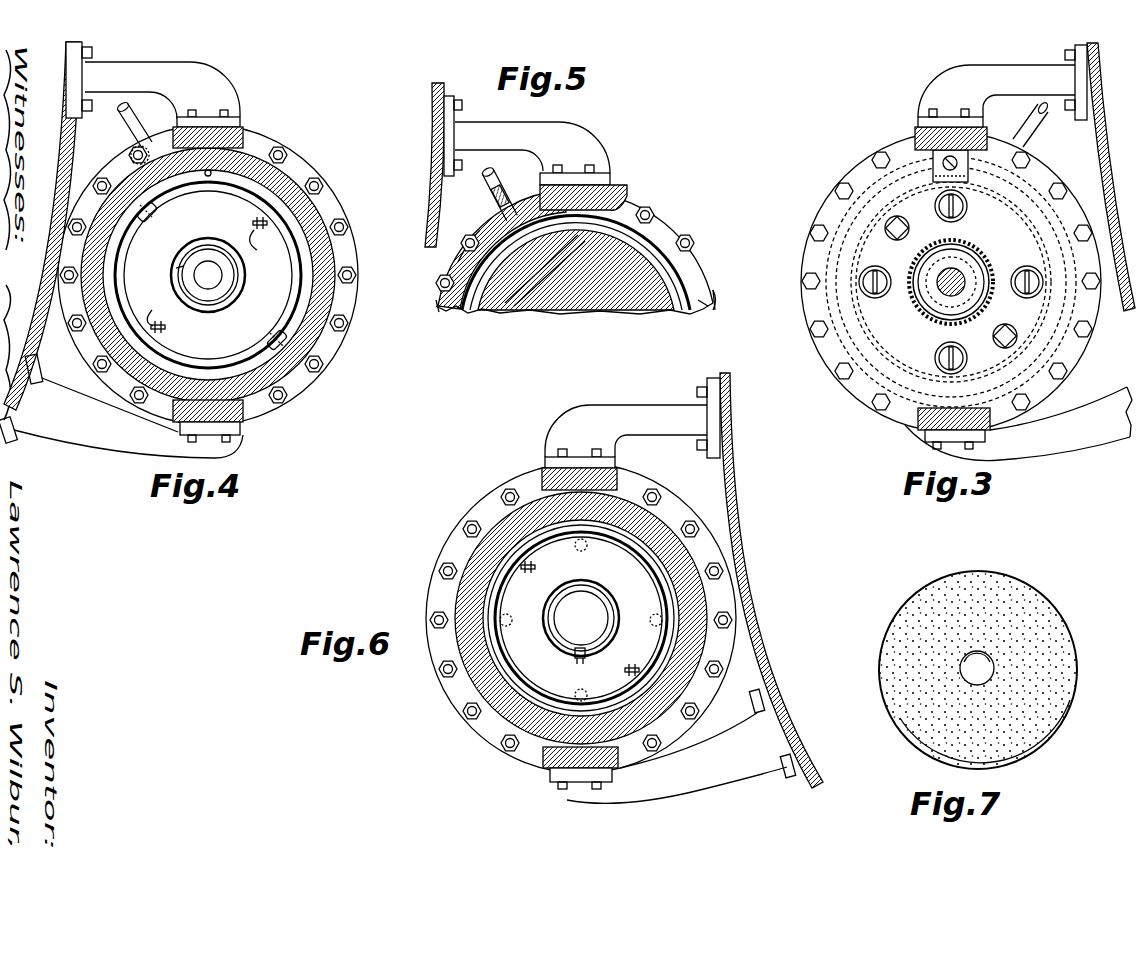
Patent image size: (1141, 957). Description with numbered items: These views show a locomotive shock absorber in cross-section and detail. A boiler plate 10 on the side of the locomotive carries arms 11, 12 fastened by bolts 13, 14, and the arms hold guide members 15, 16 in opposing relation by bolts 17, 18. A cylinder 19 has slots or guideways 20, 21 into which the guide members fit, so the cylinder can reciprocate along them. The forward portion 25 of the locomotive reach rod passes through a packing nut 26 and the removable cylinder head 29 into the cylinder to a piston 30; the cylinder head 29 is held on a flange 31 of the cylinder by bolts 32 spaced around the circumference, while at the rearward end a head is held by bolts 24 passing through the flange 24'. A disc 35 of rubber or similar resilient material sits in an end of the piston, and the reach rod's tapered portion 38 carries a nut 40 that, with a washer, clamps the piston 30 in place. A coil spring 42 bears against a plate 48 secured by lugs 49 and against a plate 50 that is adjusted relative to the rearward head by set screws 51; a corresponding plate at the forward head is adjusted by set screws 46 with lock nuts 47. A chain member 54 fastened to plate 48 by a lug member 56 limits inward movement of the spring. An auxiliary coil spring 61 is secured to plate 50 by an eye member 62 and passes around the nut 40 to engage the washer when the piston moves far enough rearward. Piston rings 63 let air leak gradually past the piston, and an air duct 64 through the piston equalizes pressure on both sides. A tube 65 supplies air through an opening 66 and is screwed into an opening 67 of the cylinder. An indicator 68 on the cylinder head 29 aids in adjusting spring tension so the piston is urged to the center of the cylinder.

In FIG. 4, the boiler plate 10 is at (44, 309).
In FIG. 5, the boiler plate 10 is at (436, 171).
In FIG. 3, the boiler plate 10 is at (1100, 150).
In FIG. 6, the boiler plate 10 is at (730, 440).
In FIG. 4, the arm 11 is at (175, 73).
In FIG. 5, the arm 11 is at (532, 147).
In FIG. 3, the arm 11 is at (996, 91).
In FIG. 6, the arm 11 is at (625, 407).
In FIG. 4, the arm 12 is at (90, 443).
In FIG. 3, the arm 12 is at (1092, 413).
In FIG. 6, the arm 12 is at (683, 797).
In FIG. 4, the bolts 13 is at (93, 52).
In FIG. 5, the bolts 13 is at (462, 164).
In FIG. 3, the bolts 13 is at (1066, 100).
In FIG. 6, the bolts 13 is at (700, 440).
In FIG. 4, the bolts 14 is at (42, 372).
In FIG. 6, the bolts 14 is at (752, 710).
In FIG. 4, the guide member 15 is at (241, 124).
In FIG. 5, the guide member 15 is at (606, 176).
In FIG. 3, the guide member 15 is at (920, 122).
In FIG. 6, the guide member 15 is at (546, 462).
In FIG. 4, the guide member 16 is at (241, 430).
In FIG. 3, the guide member 16 is at (932, 440).
In FIG. 6, the guide member 16 is at (552, 778).
In FIG. 4, the bolts 17 is at (227, 111).
In FIG. 5, the bolts 17 is at (594, 166).
In FIG. 3, the bolts 17 is at (964, 110).
In FIG. 6, the bolts 17 is at (596, 450).
In FIG. 4, the bolts 18 is at (231, 443).
In FIG. 3, the bolts 18 is at (975, 446).
In FIG. 6, the bolts 18 is at (596, 790).
In FIG. 5, the cylinder 19 is at (718, 297).
In FIG. 4, the slot or guideway 20 is at (246, 139).
In FIG. 5, the slot or guideway 20 is at (626, 191).
In FIG. 3, the slot or guideway 20 is at (915, 140).
In FIG. 6, the slot or guideway 20 is at (542, 478).
In FIG. 4, the slot or guideway 21 is at (248, 418).
In FIG. 3, the slot or guideway 21 is at (920, 426).
In FIG. 6, the slot or guideway 21 is at (545, 765).
In FIG. 6, the bolts 24 is at (573, 622).
In FIG. 6, the flange 24' is at (559, 618).
In FIG. 3, the forward portion of locomotive reach rod 25 is at (940, 288).
In FIG. 3, the packing nut 26 is at (970, 266).
In FIG. 3, the removable cylinder head 29 is at (828, 335).
In FIG. 5, the piston 30 is at (652, 310).
In FIG. 4, the flange 31 is at (342, 206).
In FIG. 5, the flange 31 is at (698, 253).
In FIG. 4, the bolts 32 is at (320, 180).
In FIG. 5, the bolts 32 is at (655, 212).
In FIG. 3, the bolts 32 is at (814, 228).
In FIG. 7, the disc 35 is at (905, 615).
In FIG. 4, the tapered portion 38 is at (229, 292).
In FIG. 4, the nut 40 is at (220, 279).
In FIG. 4, the coil spring 42 is at (300, 254).
In FIG. 6, the coil spring 42 is at (628, 543).
In FIG. 3, the set screws 46 is at (964, 210).
In FIG. 3, the lock nuts 47 is at (968, 200).
In FIG. 4, the plate 48 is at (322, 297).
In FIG. 5, the plate 48 is at (445, 300).
In FIG. 4, the lugs 49 is at (150, 224).
In FIG. 6, the plate 50 is at (512, 583).
In FIG. 3, the set screws 51 is at (884, 228).
In FIG. 6, the set screws 51 is at (581, 620).
In FIG. 4, the chain member 54 is at (252, 224).
In FIG. 6, the chain member 54 is at (528, 574).
In FIG. 4, the lug member 56 is at (211, 278).
In FIG. 4, the coil spring 61 is at (184, 256).
In FIG. 3, the coil spring 61 is at (933, 165).
In FIG. 6, the coil spring 61 is at (598, 582).
In FIG. 6, the eye member 62 is at (574, 660).
In FIG. 5, the piston rings 63 is at (703, 306).
In FIG. 4, the air duct 64 is at (208, 177).
In FIG. 5, the air duct 64 is at (508, 306).
In FIG. 4, the tube 65 is at (124, 128).
In FIG. 5, the tube 65 is at (485, 186).
In FIG. 3, the tube 65 is at (1036, 122).
In FIG. 5, the opening 66 is at (470, 248).
In FIG. 5, the opening 67 is at (503, 183).
In FIG. 3, the indicator 68 is at (905, 172).